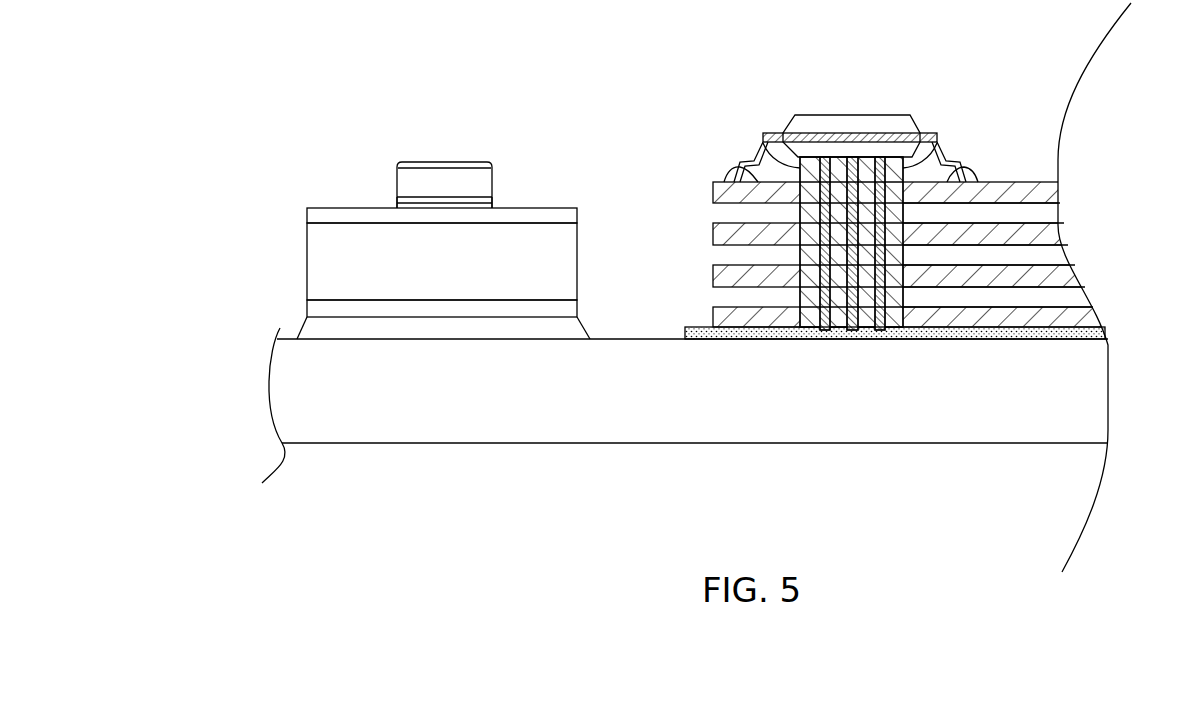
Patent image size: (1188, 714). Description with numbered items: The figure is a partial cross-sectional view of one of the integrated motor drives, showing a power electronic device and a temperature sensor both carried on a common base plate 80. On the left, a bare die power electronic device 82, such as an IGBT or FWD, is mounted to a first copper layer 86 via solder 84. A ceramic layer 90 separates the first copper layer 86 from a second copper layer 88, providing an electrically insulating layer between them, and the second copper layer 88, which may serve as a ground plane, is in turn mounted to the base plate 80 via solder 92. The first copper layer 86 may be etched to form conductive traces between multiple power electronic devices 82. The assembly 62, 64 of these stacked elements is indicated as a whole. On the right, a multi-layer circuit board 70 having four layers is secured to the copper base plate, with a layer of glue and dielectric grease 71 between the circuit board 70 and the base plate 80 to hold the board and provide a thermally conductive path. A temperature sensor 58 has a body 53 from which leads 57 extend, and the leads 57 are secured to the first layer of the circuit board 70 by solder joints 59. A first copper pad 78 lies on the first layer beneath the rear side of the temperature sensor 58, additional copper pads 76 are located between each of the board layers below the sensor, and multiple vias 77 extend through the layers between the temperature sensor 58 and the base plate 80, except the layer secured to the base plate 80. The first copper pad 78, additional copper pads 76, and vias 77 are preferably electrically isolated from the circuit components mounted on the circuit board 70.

The body 53 is at (851, 96).
The leads 57 is at (775, 134).
The temperature sensor 58 is at (808, 113).
The solder joints 59 is at (728, 182).
The passive component 62 is at (432, 199).
The passive component 64 is at (432, 199).
The circuit board 70 is at (917, 282).
The layer of glue and dielectric grease 71 is at (957, 340).
The additional copper pads 76 is at (803, 213).
The vias 77 is at (872, 331).
The first copper pad 78 is at (768, 135).
The base plate 80 is at (358, 417).
The bare die power electronic device 82 is at (408, 177).
The solder 84 is at (393, 206).
The first copper layer 86 is at (308, 222).
The second copper layer 88 is at (308, 312).
The ceramic layer 90 is at (574, 263).
The solder 92 is at (588, 335).